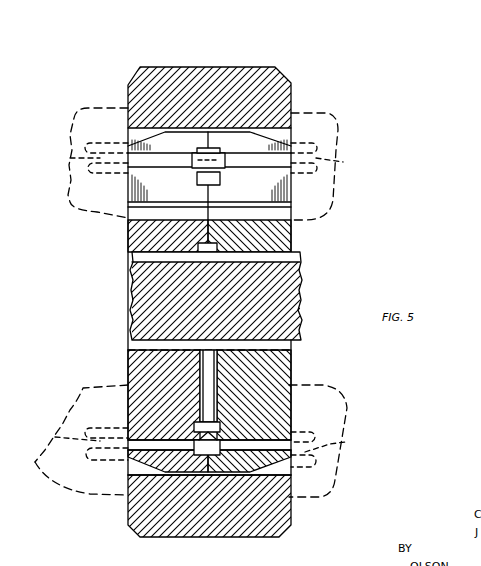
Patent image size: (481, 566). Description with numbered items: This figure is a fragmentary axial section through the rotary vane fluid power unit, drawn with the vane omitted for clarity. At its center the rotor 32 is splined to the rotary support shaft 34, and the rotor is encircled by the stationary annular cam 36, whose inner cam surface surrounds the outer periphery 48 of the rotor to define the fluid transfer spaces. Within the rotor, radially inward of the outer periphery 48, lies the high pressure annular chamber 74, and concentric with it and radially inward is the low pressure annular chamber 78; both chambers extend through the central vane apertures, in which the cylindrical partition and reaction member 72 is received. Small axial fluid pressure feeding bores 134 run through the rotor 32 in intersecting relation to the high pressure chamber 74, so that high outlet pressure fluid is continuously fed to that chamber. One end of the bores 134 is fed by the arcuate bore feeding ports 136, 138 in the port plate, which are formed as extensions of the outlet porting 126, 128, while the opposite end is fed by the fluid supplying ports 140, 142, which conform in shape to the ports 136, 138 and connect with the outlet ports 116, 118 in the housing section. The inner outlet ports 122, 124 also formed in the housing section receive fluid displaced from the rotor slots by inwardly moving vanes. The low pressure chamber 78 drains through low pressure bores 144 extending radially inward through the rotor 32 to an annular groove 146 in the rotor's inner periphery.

The rotor 32 is at (122, 239).
The rotary support shaft 34 is at (275, 290).
The annular cam 36 is at (190, 93).
The outer periphery of the rotor 48 is at (233, 128).
The cylindrical partition and reaction member 72 is at (222, 161).
The high pressure annular chamber 74 is at (198, 151).
The low pressure annular chamber 78 is at (222, 181).
The outlet port 116 is at (95, 495).
The outlet port 118 is at (110, 107).
The inner outlet port 122 is at (83, 388).
The inner outlet port 124 is at (85, 213).
The outlet porting 126 is at (300, 498).
The outlet porting 128 is at (346, 219).
The axial fluid pressure feeding bores 134 is at (176, 165).
The arcuate bore feeding port 136 is at (345, 442).
The arcuate bore feeding port 138 is at (343, 163).
The fluid supplying port 140 is at (55, 437).
The fluid supplying port 142 is at (70, 158).
The low pressure bores 144 is at (197, 399).
The annular groove 146 is at (220, 246).